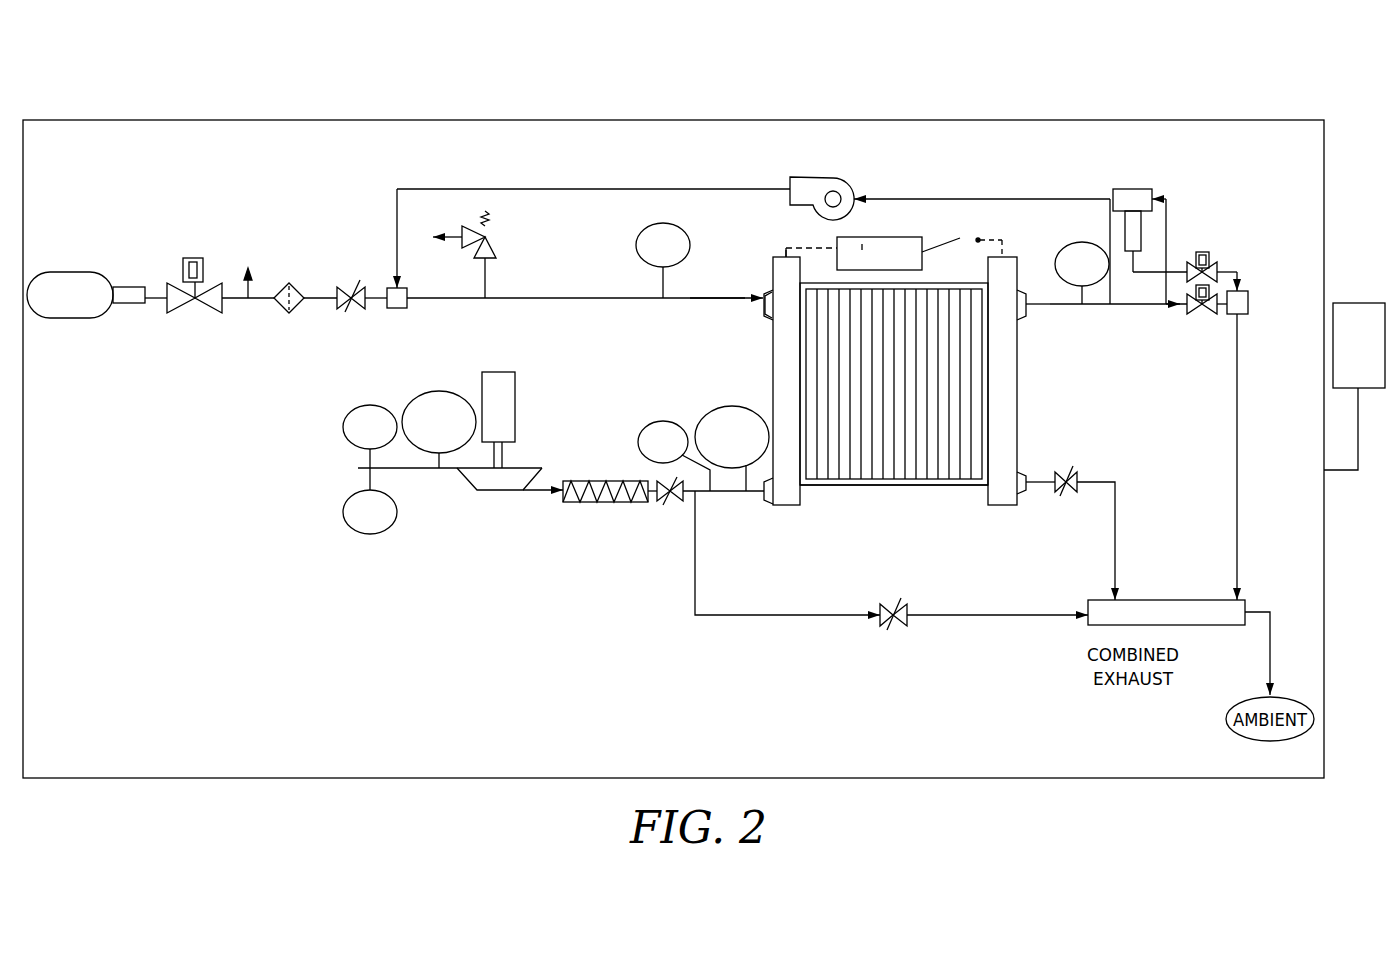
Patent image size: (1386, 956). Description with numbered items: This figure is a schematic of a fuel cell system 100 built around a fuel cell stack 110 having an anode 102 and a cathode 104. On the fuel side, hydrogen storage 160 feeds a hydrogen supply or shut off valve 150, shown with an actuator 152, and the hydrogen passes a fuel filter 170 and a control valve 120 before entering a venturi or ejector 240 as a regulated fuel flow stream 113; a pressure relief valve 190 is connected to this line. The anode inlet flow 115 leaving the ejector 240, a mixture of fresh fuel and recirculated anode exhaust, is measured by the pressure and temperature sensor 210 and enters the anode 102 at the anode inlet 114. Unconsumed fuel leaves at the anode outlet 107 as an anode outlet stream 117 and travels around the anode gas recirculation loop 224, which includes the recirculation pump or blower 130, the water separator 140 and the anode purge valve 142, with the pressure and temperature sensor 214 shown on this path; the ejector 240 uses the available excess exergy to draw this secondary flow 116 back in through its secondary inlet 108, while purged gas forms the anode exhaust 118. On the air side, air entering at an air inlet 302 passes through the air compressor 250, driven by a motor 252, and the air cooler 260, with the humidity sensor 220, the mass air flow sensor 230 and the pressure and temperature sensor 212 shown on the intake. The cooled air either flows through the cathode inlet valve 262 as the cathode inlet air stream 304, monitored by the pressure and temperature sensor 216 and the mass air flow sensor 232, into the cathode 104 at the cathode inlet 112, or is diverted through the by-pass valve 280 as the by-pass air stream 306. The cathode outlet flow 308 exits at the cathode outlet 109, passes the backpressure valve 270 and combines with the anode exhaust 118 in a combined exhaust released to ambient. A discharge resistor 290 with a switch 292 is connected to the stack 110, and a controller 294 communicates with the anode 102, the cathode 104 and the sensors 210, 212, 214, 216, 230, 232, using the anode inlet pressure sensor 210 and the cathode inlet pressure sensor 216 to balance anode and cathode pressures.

The fuel cell system 100 is at (116, 104).
The anode 102 is at (986, 276).
The cathode 104 is at (971, 516).
The anode outlet 107 is at (1068, 342).
The secondary inlet 108 is at (451, 276).
The cathode outlet 109 is at (1073, 531).
The fuel cell stack 110 is at (930, 399).
The cathode inlet 112 is at (805, 539).
The regulated fuel flow stream 113 is at (391, 266).
The anode inlet 114 is at (771, 282).
The anode inlet flow 115 is at (760, 349).
The secondary flow 116 is at (646, 182).
The cathode exhaust line 117 is at (1068, 300).
The anode exhaust 118 is at (1228, 424).
The control valve 120 is at (381, 349).
The recirculation pump or blower 130 is at (921, 172).
The water separator 140 is at (1158, 184).
The anode purge valve 142 is at (1220, 354).
The hydrogen supply or shut off valve 150 is at (193, 354).
The valve actuator 152 is at (193, 244).
The hydrogen storage 160 is at (94, 309).
The fuel filter 170 is at (310, 344).
The pressure relief valve 190 is at (556, 254).
The pressure and temperature sensor 210 is at (688, 258).
The pressure and temperature sensor 212 is at (395, 440).
The pressure and temperature sensor 214 is at (1107, 277).
The pressure and temperature sensor 216 is at (689, 455).
The humidity sensor 220 is at (395, 525).
The anode gas recirculation loop 224 is at (758, 226).
The mass air flow sensor 230 is at (463, 435).
The mass air flow sensor 232 is at (756, 448).
The venturi or ejector 240 is at (448, 344).
The air compressor 250 is at (526, 540).
The motor 252 is at (576, 435).
The air cooler 260 is at (618, 474).
The cathode inlet valve 262 is at (690, 540).
The backpressure valve 270 is at (1138, 466).
The by-pass valve 280 is at (966, 654).
The discharge resistor 290 is at (941, 232).
The switch 292 is at (1016, 232).
The controller 294 is at (1384, 357).
The fuel feed line 302 is at (345, 484).
The cathode inlet air stream 304 is at (753, 530).
The by-pass air stream 306 is at (693, 600).
The cathode outlet flow 308 is at (1066, 466).